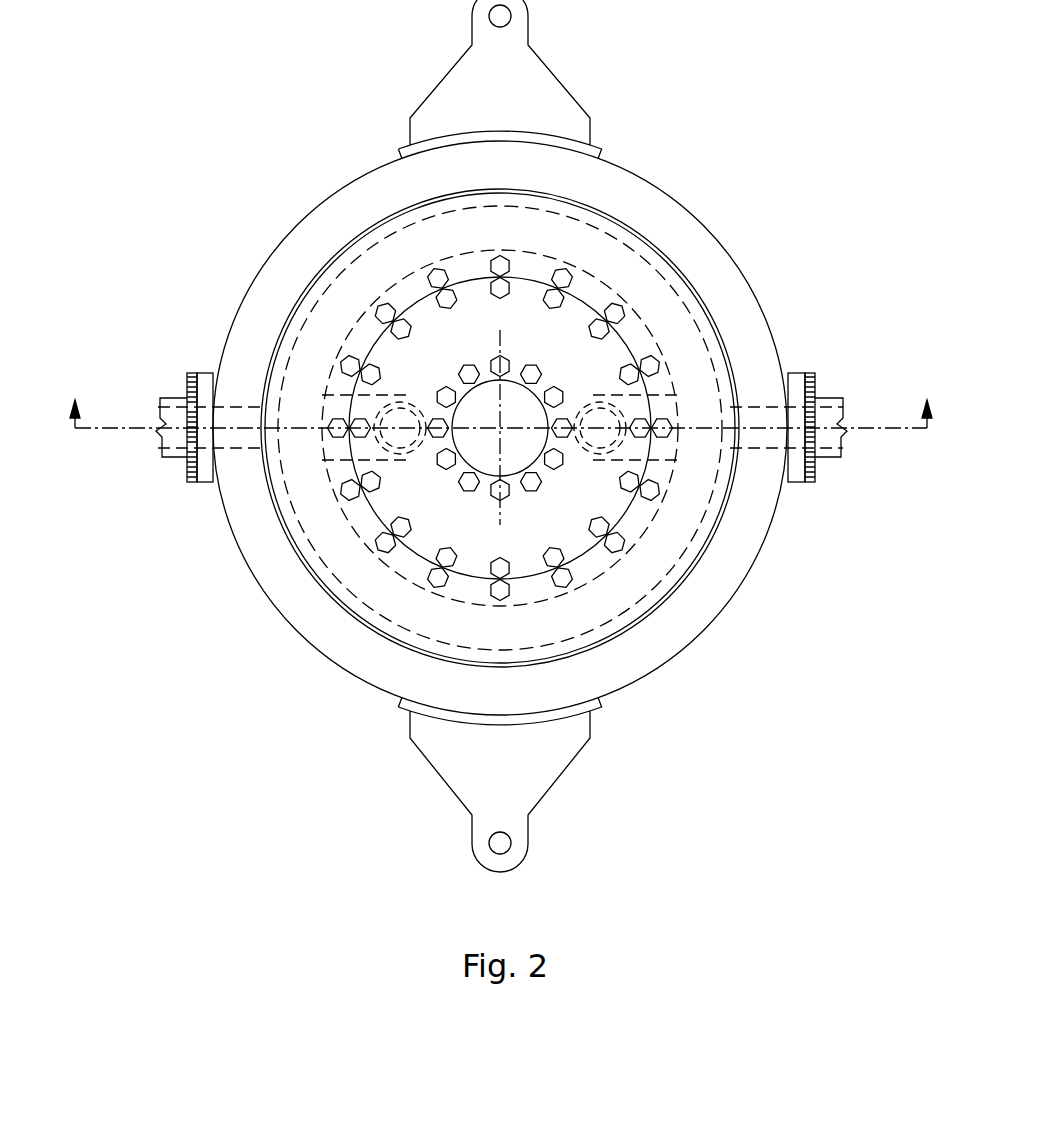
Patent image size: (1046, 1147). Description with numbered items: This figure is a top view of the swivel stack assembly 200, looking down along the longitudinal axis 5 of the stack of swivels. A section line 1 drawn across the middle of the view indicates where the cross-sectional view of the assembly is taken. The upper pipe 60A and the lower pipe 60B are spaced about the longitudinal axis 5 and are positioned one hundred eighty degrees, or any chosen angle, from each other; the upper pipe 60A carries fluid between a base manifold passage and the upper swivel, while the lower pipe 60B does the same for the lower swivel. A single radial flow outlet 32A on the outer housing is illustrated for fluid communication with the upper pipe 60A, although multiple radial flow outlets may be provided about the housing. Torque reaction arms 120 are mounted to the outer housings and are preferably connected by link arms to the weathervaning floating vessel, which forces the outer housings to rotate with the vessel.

The steam generator assembly 200 is at (770, 205).
The torque reaction arms 120 is at (575, 118).
The longitudinal axis 5 is at (500, 428).
The upper pipe 60A is at (596, 416).
The lower pipe 60B is at (400, 416).
The radial flow outlet 32A is at (763, 413).
The section line 1- 1 is at (501, 403).